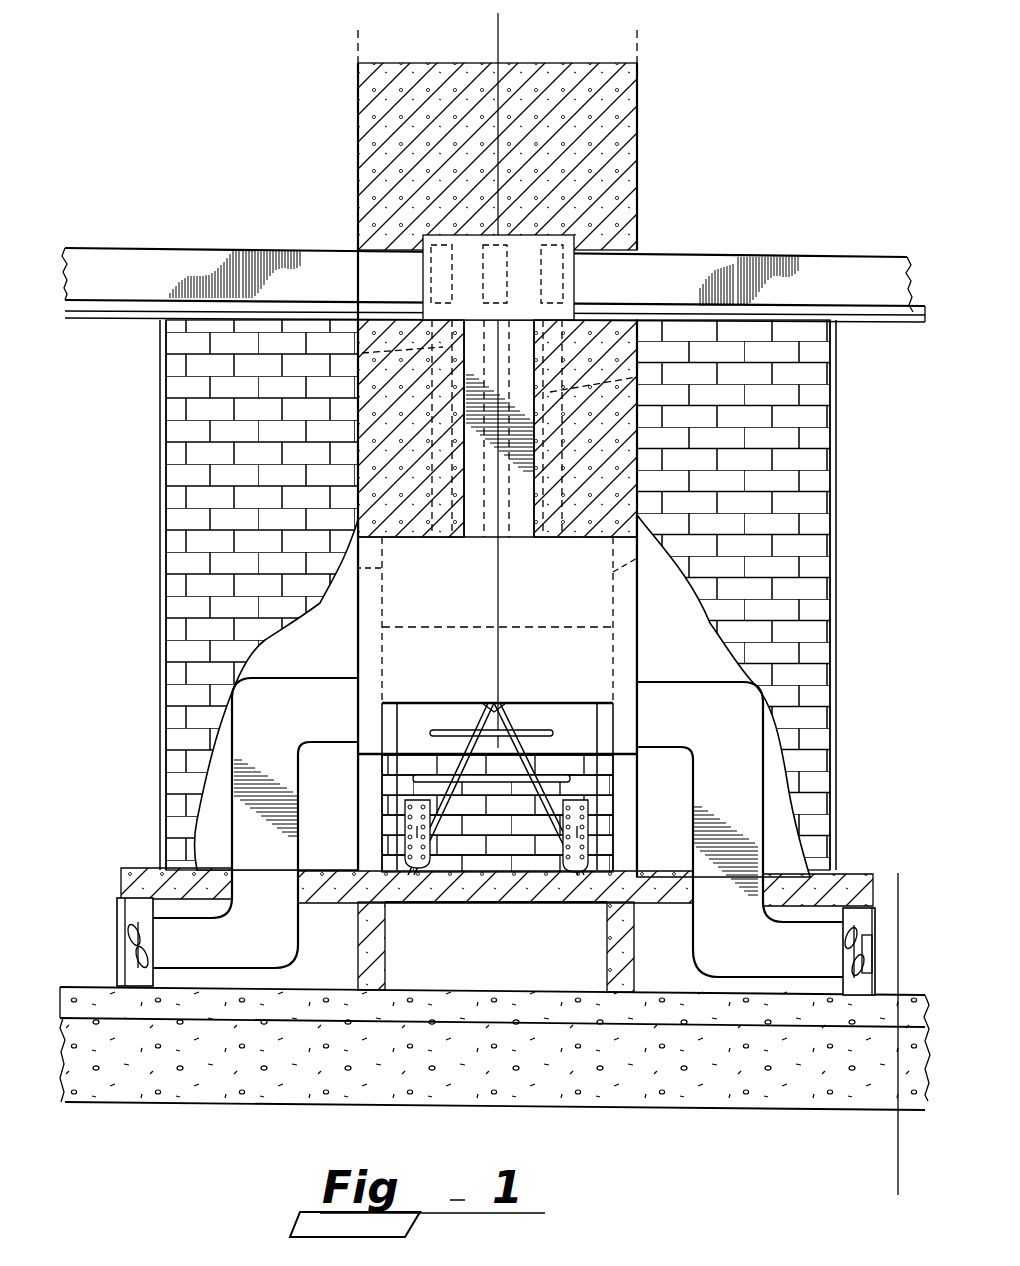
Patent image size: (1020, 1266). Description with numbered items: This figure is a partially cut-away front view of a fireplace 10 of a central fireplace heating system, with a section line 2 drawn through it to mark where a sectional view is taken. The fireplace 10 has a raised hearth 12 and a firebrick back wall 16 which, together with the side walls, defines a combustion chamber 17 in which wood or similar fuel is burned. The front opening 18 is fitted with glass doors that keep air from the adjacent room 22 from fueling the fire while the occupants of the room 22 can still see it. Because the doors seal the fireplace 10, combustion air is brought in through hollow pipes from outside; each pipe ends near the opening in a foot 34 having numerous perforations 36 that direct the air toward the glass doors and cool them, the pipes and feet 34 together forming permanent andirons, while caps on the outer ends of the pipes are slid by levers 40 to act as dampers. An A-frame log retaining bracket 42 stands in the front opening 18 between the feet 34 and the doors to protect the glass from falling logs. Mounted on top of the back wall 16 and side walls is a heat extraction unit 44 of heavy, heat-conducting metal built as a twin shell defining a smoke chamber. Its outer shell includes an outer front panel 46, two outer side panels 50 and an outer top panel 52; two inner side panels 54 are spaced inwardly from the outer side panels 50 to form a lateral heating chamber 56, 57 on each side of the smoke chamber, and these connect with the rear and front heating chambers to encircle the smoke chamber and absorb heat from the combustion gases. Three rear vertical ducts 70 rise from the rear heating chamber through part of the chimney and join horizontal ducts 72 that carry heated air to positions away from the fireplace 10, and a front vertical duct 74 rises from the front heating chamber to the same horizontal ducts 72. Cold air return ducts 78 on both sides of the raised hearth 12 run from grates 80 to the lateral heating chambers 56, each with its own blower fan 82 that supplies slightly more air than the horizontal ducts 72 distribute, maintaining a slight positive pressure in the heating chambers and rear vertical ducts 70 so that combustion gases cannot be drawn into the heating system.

The section line 2- 2 is at (498, 13).
The fireplace 10 is at (118, 455).
The raised hearth 12 is at (423, 897).
The back wall 16 is at (502, 845).
The combustion chamber 17 is at (497, 834).
The front opening 18 is at (420, 793).
The adjacent room 22 is at (906, 716).
The foot 34 is at (405, 815).
The perforations 36 is at (408, 845).
The levers 40 is at (412, 830).
The log retaining bracket 42 is at (437, 762).
The heat extraction unit 44 is at (352, 667).
The outer front panel 46 is at (592, 663).
The outer side panels 50 is at (358, 617).
The outer top panel 52 is at (620, 465).
The inner side panels 54 is at (510, 553).
The lateral heating chamber 56 is at (371, 636).
The lateral heating chamber 57 is at (637, 611).
The rear vertical ducts 70 is at (360, 350).
The horizontal ducts 72 is at (712, 262).
The front vertical duct 74 is at (520, 352).
The cold air return ducts 78 is at (295, 688).
The grates 80 is at (117, 915).
The blower fan 82 is at (127, 950).